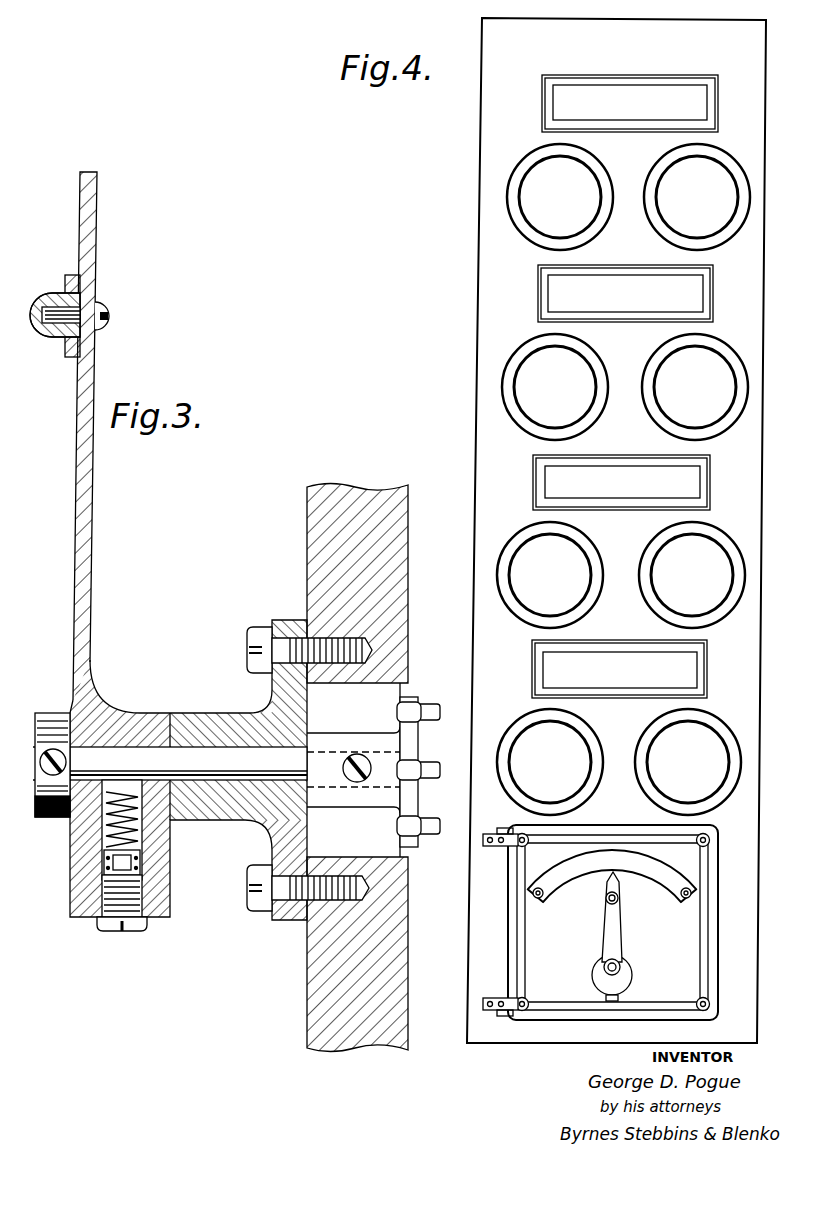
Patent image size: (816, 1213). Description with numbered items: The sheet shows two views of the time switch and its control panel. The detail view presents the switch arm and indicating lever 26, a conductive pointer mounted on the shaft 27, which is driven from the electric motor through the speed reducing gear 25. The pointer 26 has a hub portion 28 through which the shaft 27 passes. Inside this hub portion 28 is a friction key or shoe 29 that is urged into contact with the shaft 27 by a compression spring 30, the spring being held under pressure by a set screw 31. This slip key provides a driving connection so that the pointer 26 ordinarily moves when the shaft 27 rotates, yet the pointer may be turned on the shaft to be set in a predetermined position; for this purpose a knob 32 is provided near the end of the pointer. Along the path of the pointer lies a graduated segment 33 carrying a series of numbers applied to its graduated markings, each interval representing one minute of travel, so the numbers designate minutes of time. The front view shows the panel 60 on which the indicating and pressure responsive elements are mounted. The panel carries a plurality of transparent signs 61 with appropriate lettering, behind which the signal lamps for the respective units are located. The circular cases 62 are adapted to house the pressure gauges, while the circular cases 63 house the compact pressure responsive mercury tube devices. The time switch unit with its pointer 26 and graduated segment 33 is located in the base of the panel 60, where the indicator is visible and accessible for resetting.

In FIG. 3, the speed reducing gear 25 is at (313, 552).
In FIG. 3, the switch arm and indicating lever 26 is at (88, 524).
In FIG. 4, the switch arm and indicating lever 26 is at (617, 940).
In FIG. 3, the shaft 27 is at (188, 756).
In FIG. 4, the shaft 27 is at (633, 933).
In FIG. 3, the hub portion 28 is at (131, 724).
In FIG. 3, the friction key or shoe 29 is at (110, 805).
In FIG. 3, the compression spring 30 is at (104, 862).
In FIG. 3, the set screw 31 is at (113, 933).
In FIG. 4, the set screw 31 is at (612, 1002).
In FIG. 3, the knob 32 is at (57, 336).
In FIG. 4, the knob 32 is at (609, 903).
In FIG. 4, the graduated segment 33 is at (668, 886).
In FIG. 4, the panel 60 is at (490, 146).
In FIG. 4, the transparent signs 61 is at (702, 102).
In FIG. 4, the circular cases 62 is at (538, 223).
In FIG. 4, the circular cases 63 is at (718, 225).